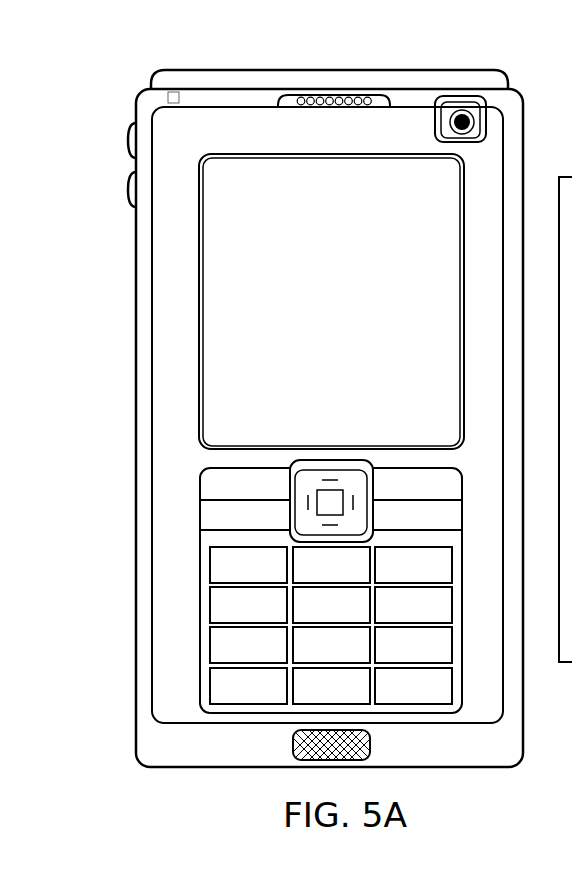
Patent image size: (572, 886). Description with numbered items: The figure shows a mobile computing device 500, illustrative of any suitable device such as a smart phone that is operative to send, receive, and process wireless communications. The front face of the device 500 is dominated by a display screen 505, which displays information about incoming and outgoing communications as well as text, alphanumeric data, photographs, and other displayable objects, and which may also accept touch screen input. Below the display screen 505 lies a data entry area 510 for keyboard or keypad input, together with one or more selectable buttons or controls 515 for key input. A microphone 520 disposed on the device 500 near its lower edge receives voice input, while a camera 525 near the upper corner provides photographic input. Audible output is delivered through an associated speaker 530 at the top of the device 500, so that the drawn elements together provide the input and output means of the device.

The mobile computing device 500 is at (126, 91).
The display screen 505 is at (232, 287).
The data entry area 510 is at (200, 510).
The selectable buttons or controls 515 is at (222, 605).
The microphone 520 is at (295, 745).
The camera 525 is at (465, 118).
The speaker 530 is at (345, 103).